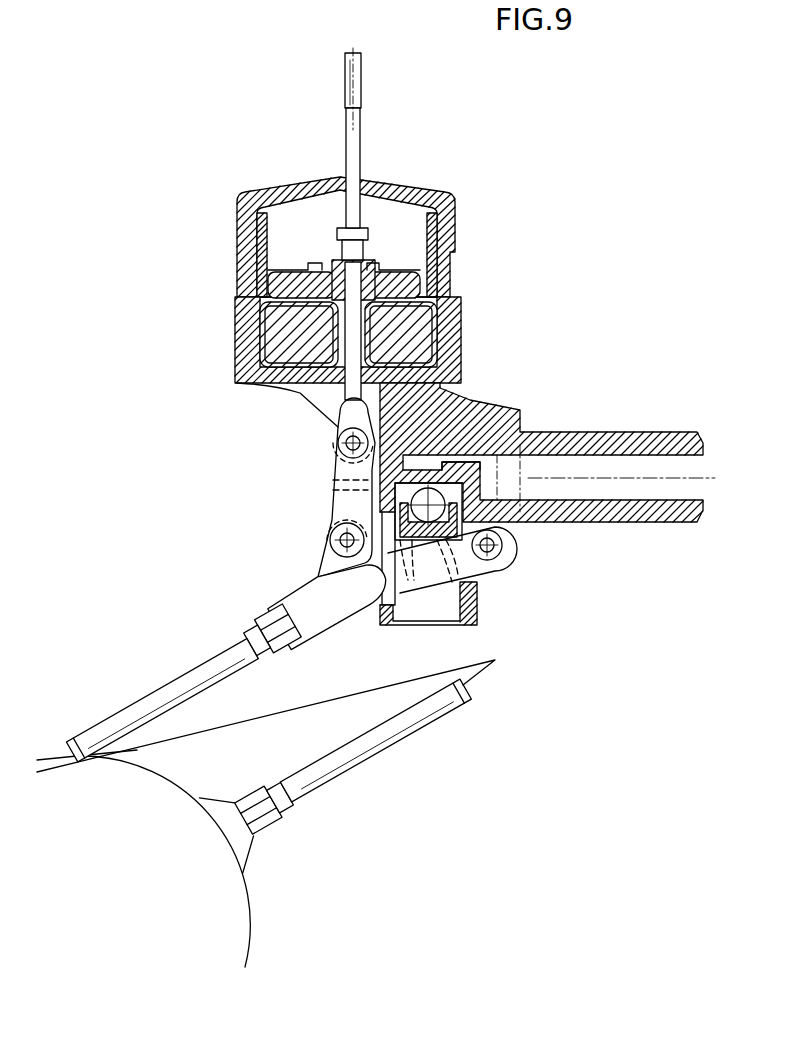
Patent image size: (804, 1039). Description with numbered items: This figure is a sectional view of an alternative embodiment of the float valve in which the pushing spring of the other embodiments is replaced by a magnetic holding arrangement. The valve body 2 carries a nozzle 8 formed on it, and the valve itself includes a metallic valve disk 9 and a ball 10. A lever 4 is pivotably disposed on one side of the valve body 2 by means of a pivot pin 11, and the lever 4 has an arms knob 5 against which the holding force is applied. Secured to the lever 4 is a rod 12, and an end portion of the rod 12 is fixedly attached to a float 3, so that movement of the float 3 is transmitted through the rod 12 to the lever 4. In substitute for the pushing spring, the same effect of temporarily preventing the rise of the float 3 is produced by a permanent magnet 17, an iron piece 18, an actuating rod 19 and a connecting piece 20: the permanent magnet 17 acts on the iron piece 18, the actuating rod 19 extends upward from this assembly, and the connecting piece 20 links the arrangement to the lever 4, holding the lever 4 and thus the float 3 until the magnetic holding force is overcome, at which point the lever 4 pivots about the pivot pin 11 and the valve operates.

The valve body 2 is at (472, 392).
The float 3 is at (250, 898).
The lever 4 is at (272, 592).
The arms knob 5 is at (327, 553).
The nozzle 8 is at (442, 467).
The metallic valve disk 9 is at (503, 530).
The ball 10 is at (493, 492).
The pivot pin 11 is at (490, 547).
The rod 12 is at (170, 677).
The permanent magnet 17 is at (452, 313).
The iron piece 18 is at (417, 288).
The actuating rod 19 is at (362, 143).
The connecting piece 20 is at (338, 470).